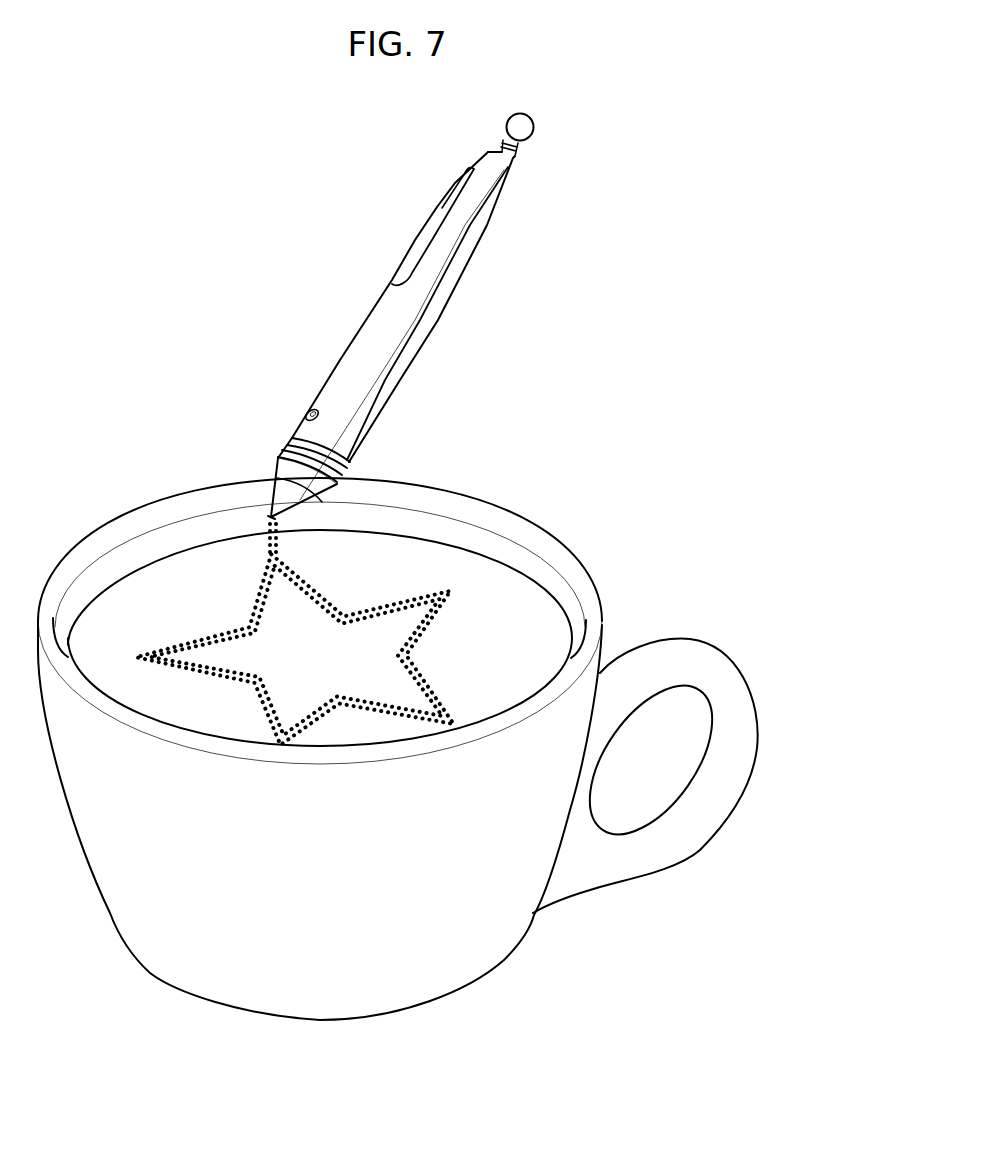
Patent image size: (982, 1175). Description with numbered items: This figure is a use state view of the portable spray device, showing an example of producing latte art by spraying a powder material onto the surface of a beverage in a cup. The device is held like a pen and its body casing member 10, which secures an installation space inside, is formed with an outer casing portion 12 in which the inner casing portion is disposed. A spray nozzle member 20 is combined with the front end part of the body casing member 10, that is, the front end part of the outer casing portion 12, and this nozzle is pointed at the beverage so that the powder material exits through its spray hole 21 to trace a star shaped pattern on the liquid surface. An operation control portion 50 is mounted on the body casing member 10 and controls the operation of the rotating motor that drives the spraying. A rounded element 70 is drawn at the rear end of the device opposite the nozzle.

The body casing member 10 is at (378, 317).
The outer casing portion 12 is at (452, 295).
The spray nozzle member 20 is at (283, 470).
The spray hole 21 is at (265, 516).
The operation control portion 50 is at (308, 413).
The knob cap 70 is at (533, 128).